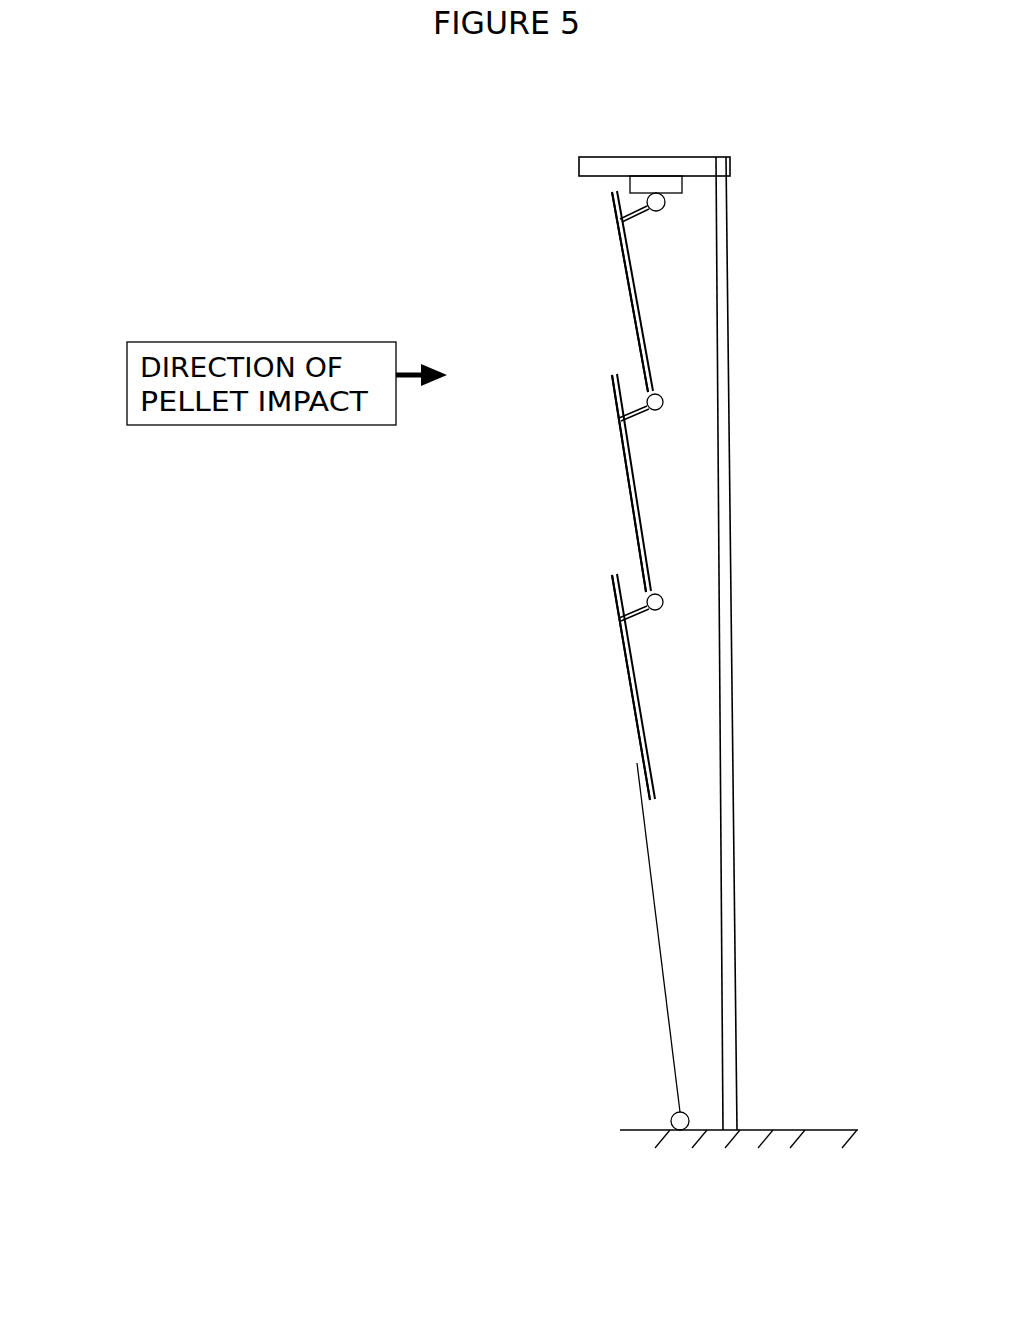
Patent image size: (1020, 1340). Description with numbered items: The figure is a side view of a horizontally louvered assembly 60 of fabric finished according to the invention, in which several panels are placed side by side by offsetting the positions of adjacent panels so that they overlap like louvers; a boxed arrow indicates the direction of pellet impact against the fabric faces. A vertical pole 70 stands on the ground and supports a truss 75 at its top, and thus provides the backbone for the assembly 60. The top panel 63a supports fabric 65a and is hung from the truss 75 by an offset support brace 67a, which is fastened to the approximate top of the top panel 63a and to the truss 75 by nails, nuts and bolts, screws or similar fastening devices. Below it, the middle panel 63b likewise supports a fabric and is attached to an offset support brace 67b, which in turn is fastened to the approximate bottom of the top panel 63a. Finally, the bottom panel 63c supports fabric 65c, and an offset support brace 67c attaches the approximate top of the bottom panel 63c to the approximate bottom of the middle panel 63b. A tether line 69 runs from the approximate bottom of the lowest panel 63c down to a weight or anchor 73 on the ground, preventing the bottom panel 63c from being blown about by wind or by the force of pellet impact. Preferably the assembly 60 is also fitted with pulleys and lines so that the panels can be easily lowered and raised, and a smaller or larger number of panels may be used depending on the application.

The horizontally louvered assembly 60 is at (183, 285).
The truss 75 is at (553, 163).
The offset support brace 67a is at (675, 213).
The offset support brace 67b is at (663, 395).
The offset support brace 67c is at (673, 600).
The top panel 63a is at (643, 328).
The middle panel 63b is at (638, 480).
The bottom panel 63c is at (657, 697).
The fabric 65a is at (604, 264).
The fabric 65c is at (570, 650).
The tether line 69 is at (638, 897).
The pole 70 is at (740, 933).
The weight or anchor 73 is at (668, 1114).